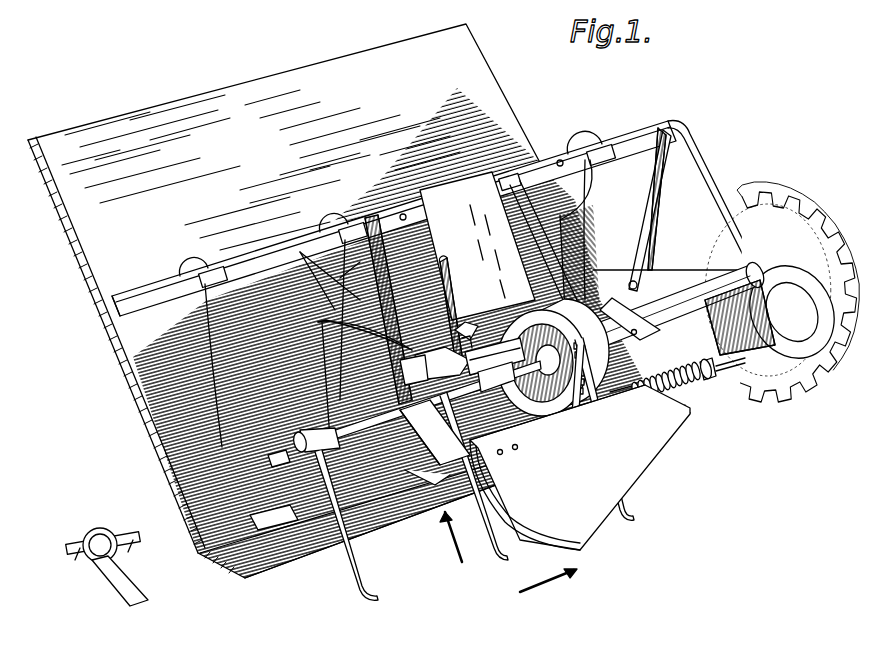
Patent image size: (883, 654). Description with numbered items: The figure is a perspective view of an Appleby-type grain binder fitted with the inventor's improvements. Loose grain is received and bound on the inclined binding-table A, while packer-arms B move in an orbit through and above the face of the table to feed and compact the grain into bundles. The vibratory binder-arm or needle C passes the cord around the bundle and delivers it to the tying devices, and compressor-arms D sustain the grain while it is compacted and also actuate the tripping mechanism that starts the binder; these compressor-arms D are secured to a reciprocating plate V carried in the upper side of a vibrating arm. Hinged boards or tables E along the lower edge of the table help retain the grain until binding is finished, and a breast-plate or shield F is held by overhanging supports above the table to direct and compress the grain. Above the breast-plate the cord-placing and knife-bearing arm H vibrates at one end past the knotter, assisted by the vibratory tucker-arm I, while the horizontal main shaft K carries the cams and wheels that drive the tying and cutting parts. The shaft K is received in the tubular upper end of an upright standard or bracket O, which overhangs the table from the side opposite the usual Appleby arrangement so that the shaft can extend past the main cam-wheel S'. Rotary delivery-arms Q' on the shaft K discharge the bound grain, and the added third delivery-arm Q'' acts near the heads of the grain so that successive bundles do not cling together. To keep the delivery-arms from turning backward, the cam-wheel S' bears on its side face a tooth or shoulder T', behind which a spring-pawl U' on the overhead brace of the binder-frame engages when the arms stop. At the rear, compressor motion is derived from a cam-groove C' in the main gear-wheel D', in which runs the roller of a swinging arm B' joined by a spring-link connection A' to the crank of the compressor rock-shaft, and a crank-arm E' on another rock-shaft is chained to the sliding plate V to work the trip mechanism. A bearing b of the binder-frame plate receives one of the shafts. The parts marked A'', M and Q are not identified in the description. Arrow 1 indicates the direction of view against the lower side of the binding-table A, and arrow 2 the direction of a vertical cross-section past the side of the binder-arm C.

The binding-table A is at (359, 301).
The spring-link connection A' is at (677, 379).
The clamp A'' is at (270, 460).
The packer-arms B is at (365, 376).
The swinging arm B' is at (342, 281).
The bearing b is at (350, 269).
The binder-arm C is at (434, 218).
The cam-groove C' is at (791, 311).
The compressor-arms D is at (435, 432).
The main gear-wheel D' is at (782, 292).
The hinged boards or tables E is at (470, 467).
The crank-arm E' is at (740, 317).
The breast-plate F is at (412, 242).
The cord-placing and knife-bearing arm H is at (420, 394).
The tucker-arm I is at (462, 329).
The main shaft K is at (466, 342).
The sleeve M is at (496, 375).
The standard or bracket O is at (683, 304).
The leg Q is at (474, 476).
The delivery-arms Q' is at (356, 472).
The third delivery-arm Q'' is at (335, 514).
The main cam-wheel S' is at (553, 357).
The tooth or shoulder T' is at (675, 216).
The spring-pawl U' is at (630, 319).
The reciprocating plate V is at (427, 487).
The arrow 1 is at (451, 537).
The arrow 2 is at (548, 579).